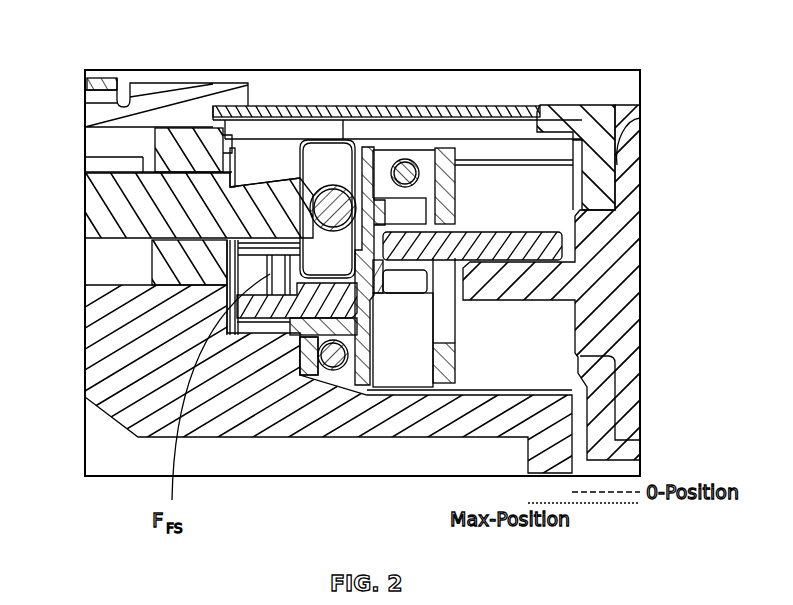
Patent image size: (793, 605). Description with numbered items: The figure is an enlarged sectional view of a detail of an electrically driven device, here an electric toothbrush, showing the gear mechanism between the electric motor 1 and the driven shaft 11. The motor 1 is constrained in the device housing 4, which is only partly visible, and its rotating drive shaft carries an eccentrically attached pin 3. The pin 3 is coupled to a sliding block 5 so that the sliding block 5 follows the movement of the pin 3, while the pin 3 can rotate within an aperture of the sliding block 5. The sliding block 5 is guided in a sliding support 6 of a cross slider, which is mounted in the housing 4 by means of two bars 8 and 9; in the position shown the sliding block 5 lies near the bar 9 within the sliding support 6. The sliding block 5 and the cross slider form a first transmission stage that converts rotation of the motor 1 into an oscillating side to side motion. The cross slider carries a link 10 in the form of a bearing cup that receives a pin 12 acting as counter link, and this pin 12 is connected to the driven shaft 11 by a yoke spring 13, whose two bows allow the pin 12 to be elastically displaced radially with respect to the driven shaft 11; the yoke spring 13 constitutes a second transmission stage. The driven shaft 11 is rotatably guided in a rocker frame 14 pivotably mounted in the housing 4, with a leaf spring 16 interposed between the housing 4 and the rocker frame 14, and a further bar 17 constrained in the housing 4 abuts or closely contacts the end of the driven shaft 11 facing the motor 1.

The electric motor 1 is at (622, 288).
The pin 3 is at (466, 240).
The device housing 4 is at (606, 112).
The sliding block 5 is at (388, 220).
The sliding support 6 is at (390, 370).
The bar 8 is at (334, 362).
The bar 9 is at (408, 160).
The link 10 is at (320, 332).
The driven shaft 11 is at (102, 217).
The pin 12 is at (262, 308).
The yoke spring 13 is at (252, 270).
The rocker frame 14 is at (102, 357).
The leaf spring 16 is at (522, 108).
The further bar 17 is at (330, 192).